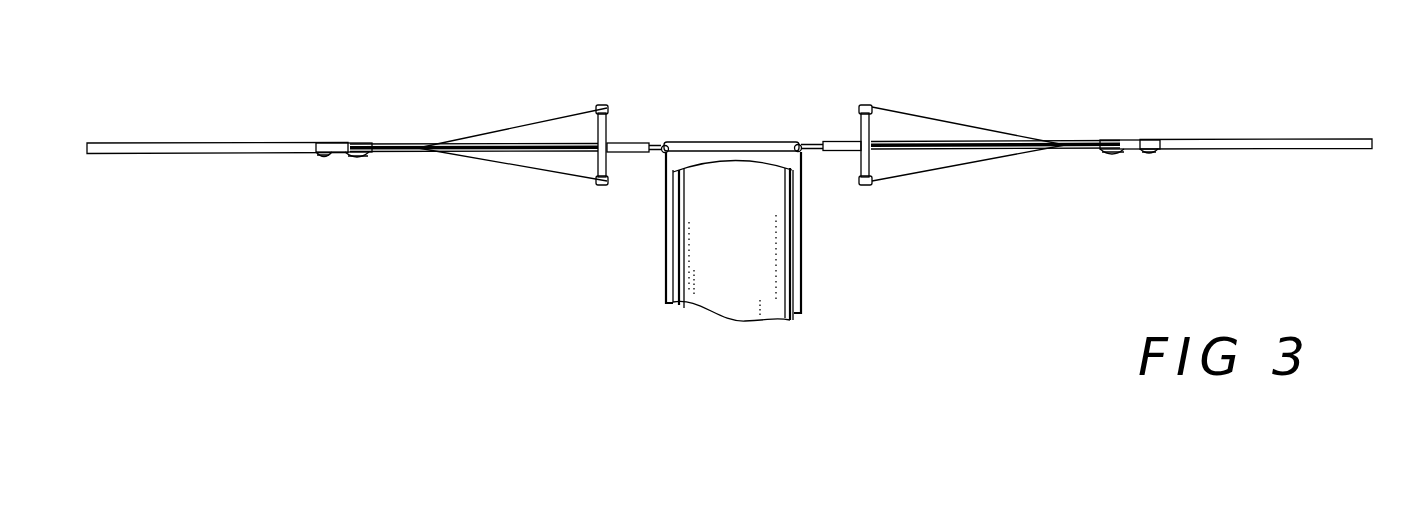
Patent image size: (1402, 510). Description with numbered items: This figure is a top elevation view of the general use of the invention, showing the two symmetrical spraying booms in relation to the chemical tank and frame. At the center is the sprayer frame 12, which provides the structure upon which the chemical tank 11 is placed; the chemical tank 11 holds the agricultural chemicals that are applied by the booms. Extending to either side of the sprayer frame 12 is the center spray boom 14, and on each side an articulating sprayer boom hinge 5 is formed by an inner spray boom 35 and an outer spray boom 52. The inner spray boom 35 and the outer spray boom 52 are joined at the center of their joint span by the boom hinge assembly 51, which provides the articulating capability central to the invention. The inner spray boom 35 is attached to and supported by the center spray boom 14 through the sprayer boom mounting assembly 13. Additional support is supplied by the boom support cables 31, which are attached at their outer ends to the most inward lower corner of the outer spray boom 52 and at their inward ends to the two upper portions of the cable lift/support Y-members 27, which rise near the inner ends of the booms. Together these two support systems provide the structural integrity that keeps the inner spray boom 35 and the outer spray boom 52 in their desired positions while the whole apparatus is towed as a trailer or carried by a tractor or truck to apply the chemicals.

The articulating sprayer boom hinge 5 is at (378, 192).
The chemical tank 11 is at (758, 228).
The sprayer frame 12 is at (658, 243).
The sprayer boom mounting assembly 13 is at (634, 133).
The center spray boom 14 is at (735, 134).
The cable lift/support Y-member 27 is at (603, 100).
The boom support cable 31 is at (505, 119).
The inner spray boom 35 is at (395, 139).
The boom hinge assembly 51 is at (345, 132).
The outer spray boom 52 is at (239, 163).